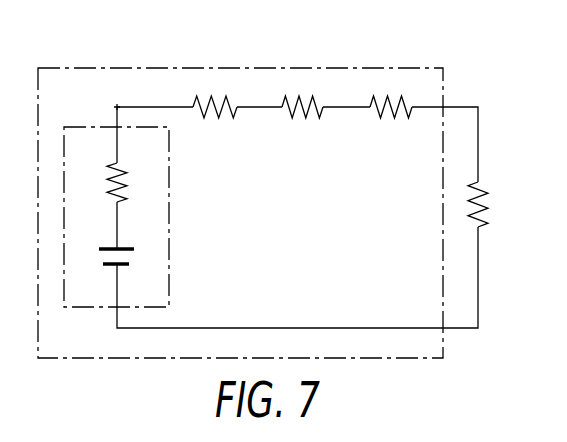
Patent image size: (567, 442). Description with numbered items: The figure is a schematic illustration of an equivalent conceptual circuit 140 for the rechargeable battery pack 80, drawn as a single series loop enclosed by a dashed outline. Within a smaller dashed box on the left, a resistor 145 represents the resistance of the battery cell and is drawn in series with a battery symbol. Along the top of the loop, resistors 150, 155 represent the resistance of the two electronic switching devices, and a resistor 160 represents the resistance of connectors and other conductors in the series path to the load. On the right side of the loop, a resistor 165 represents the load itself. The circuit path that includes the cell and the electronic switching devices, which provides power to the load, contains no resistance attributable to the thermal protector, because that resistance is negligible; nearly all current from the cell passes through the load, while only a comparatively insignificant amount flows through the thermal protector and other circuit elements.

The rechargeable battery pack 80 is at (281, 68).
The equivalent conceptual circuit 140 is at (117, 106).
The resistor 145 is at (126, 185).
The resistor 150 is at (221, 116).
The resistor 155 is at (311, 116).
The resistor 160 is at (389, 117).
The resistor 165 is at (486, 200).